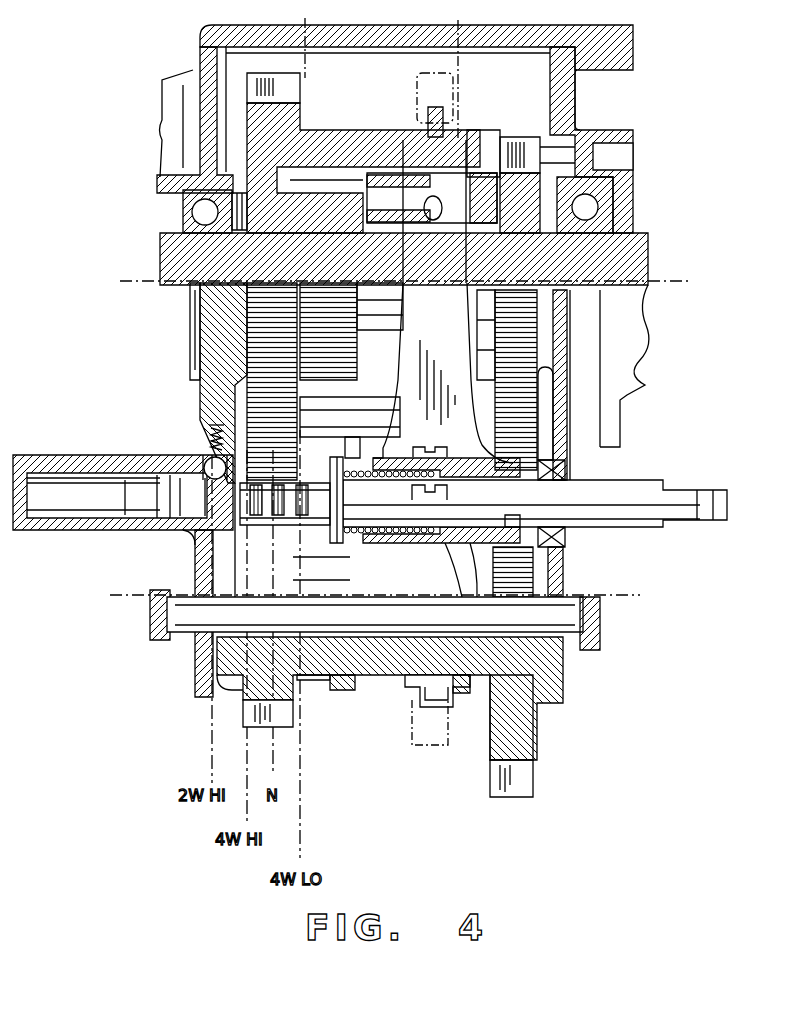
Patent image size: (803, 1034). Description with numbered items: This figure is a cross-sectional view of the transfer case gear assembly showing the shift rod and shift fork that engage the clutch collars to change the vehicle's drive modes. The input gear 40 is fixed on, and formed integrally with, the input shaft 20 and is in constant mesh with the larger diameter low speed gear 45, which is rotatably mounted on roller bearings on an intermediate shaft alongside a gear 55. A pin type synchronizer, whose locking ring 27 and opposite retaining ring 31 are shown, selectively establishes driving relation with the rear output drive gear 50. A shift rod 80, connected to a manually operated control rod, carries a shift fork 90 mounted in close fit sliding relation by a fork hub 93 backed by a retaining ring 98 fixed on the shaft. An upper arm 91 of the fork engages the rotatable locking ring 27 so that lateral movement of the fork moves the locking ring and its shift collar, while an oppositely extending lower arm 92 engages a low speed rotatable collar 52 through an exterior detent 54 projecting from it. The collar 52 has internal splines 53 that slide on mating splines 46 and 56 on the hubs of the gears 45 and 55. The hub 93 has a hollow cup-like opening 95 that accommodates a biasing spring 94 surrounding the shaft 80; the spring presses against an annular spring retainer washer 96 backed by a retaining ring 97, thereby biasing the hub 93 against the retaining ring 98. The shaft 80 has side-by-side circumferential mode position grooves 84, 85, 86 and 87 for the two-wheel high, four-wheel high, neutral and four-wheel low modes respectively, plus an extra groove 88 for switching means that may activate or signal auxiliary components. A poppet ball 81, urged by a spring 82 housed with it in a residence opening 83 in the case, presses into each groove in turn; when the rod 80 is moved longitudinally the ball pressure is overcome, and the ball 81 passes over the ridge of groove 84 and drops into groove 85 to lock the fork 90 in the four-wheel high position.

The input shaft 20 is at (648, 240).
The locking ring 27 is at (430, 110).
The retaining ring 31 is at (168, 252).
The input gear 40 is at (540, 150).
The low speed gear 45 is at (540, 433).
The splines 46 is at (360, 690).
The rear output drive gear 50 is at (290, 110).
The low speed rotatable collar 52 is at (455, 690).
The internal splines 53 is at (470, 612).
The exterior detent 54 is at (425, 705).
The gear 55 is at (250, 680).
The splines 56 is at (320, 680).
The shift rod 80 is at (605, 498).
The poppet ball 81 is at (208, 462).
The spring 82 is at (208, 440).
The residence opening 83 is at (213, 437).
The mode position groove 84 is at (203, 478).
The mode position groove 85 is at (258, 470).
The mode position groove 86 is at (272, 527).
The mode position groove 87 is at (303, 477).
The extra groove 88 is at (157, 498).
The shift fork 90 is at (455, 335).
The upper arm 91 is at (457, 83).
The lower arm 92 is at (430, 745).
The fork hub 93 is at (468, 468).
The biasing spring 94 is at (402, 457).
The hollow cup-like opening 95 is at (400, 550).
The spring retainer washer 96 is at (337, 457).
The retaining ring 97 is at (352, 425).
The retaining ring 98 is at (513, 520).